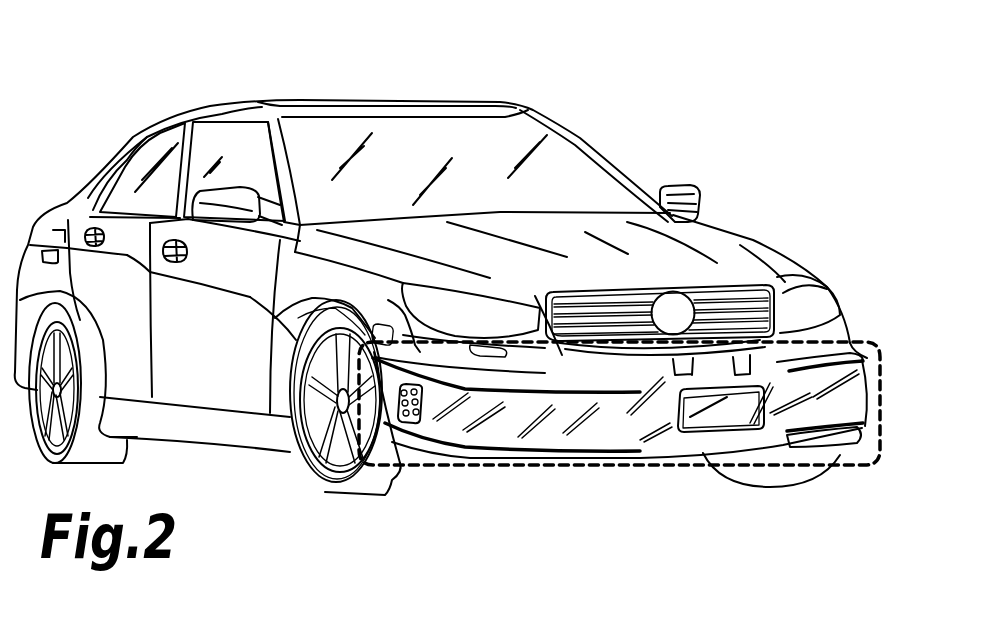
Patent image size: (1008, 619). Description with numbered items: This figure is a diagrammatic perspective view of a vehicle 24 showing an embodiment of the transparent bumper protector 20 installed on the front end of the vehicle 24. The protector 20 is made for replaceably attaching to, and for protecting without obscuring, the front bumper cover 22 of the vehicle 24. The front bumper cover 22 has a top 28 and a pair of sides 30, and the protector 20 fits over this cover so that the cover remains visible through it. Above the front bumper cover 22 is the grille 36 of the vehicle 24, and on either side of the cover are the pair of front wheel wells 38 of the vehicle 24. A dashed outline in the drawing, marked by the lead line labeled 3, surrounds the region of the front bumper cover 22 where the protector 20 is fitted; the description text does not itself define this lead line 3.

The front bumper module 3 is at (608, 476).
The protector 20 is at (758, 525).
The front bumper cover 22 is at (836, 348).
The vehicle 24 is at (309, 95).
The top 28 is at (560, 358).
The sides 30 is at (395, 300).
The grille 36 is at (596, 276).
The front wheel wells 38 is at (302, 314).